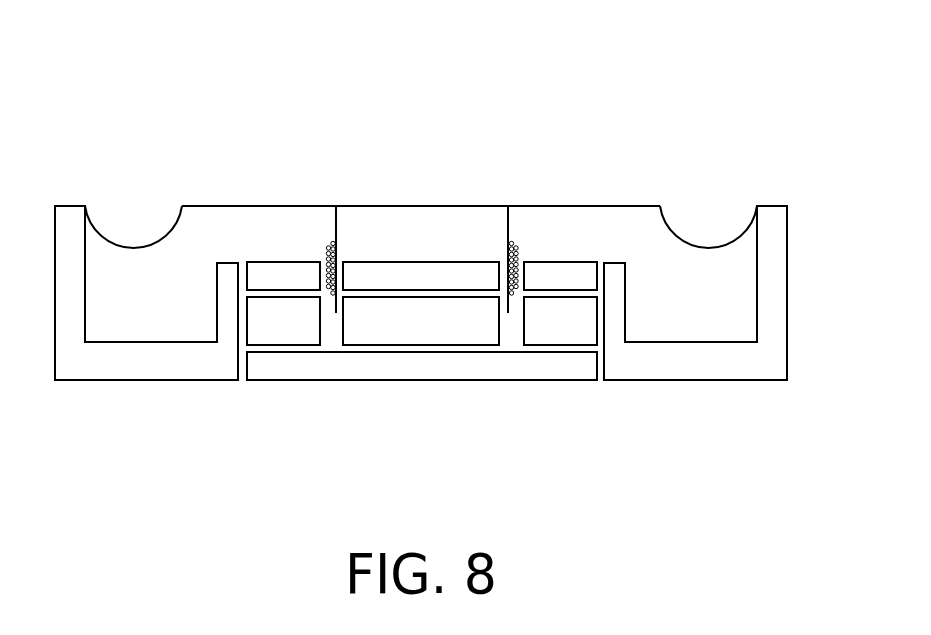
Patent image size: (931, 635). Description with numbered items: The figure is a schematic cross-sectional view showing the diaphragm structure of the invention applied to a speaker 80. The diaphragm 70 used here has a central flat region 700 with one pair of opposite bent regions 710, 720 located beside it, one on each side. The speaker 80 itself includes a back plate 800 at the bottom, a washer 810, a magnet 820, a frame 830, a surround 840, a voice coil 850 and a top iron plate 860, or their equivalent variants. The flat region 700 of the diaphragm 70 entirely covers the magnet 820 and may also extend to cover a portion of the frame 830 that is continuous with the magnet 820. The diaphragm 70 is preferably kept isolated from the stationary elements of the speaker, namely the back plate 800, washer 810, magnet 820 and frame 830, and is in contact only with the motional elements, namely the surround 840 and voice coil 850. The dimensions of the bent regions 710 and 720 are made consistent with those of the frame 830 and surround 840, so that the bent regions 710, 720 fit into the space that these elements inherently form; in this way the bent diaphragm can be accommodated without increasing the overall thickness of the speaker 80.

The speaker 80 is at (841, 454).
The diaphragm 70 is at (421, 136).
The flat region 700 is at (407, 207).
The bent region 710 is at (702, 195).
The bent region 720 is at (168, 273).
The back plate 800 is at (437, 375).
The washer 810 is at (547, 280).
The magnet 820 is at (253, 338).
The frame 830 is at (93, 372).
The surround 840 is at (80, 203).
The voice coil 850 is at (326, 249).
The top iron plate 860 is at (390, 272).